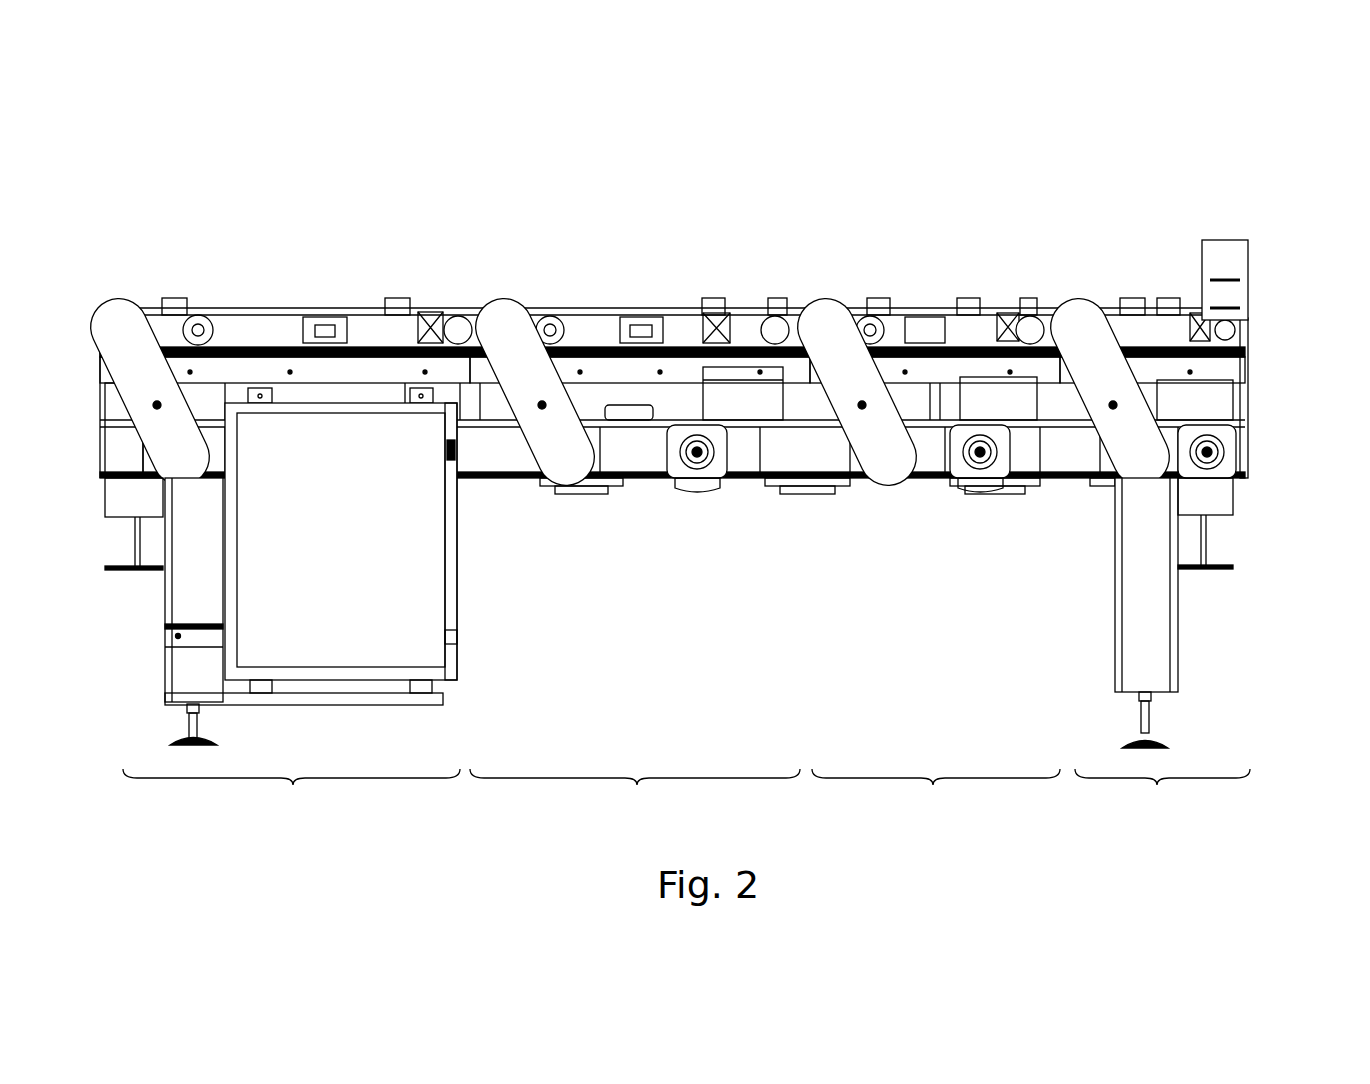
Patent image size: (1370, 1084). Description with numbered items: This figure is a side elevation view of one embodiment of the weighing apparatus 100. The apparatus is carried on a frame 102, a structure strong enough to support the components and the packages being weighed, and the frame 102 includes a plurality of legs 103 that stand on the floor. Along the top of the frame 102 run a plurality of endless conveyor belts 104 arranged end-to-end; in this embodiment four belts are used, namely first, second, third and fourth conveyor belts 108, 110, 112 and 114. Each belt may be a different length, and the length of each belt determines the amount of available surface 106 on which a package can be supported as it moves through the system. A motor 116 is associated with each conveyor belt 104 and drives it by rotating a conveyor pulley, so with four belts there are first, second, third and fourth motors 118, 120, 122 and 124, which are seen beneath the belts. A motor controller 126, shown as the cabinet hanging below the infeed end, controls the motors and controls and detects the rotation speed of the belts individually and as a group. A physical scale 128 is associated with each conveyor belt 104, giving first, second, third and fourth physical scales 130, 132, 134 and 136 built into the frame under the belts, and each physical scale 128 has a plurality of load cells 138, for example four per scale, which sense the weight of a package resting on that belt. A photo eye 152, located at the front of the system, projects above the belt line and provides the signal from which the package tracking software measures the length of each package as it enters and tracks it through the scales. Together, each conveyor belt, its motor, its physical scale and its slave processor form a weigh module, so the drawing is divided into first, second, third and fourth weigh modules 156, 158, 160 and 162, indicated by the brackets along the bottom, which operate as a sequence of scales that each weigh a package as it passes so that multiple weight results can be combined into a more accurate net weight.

The weighing apparatus 100 is at (724, 403).
The frame 102 is at (1207, 505).
The legs 103 is at (1143, 585).
The endless conveyor belts 104 is at (230, 308).
The surface 106 is at (601, 306).
The first conveyor belt 108 is at (1150, 305).
The second conveyor belt 110 is at (915, 307).
The third conveyor belt 112 is at (655, 305).
The fourth conveyor belt 114 is at (350, 307).
The motor 116 is at (672, 485).
The first motor 118 is at (1242, 477).
The second motor 120 is at (967, 487).
The third motor 122 is at (710, 487).
The fourth motor 124 is at (460, 478).
The motor controller 126 is at (357, 554).
The physical scale 128 is at (930, 373).
The first physical scale 130 is at (1218, 368).
The second physical scale 132 is at (983, 368).
The third physical scale 134 is at (742, 367).
The fourth physical scale 136 is at (280, 370).
The load cells 138 is at (1220, 400).
The photo eye 152 is at (1226, 255).
The first weigh module 156 is at (1162, 792).
The second weigh module 158 is at (936, 792).
The third weigh module 160 is at (635, 792).
The fourth weigh module 162 is at (291, 792).